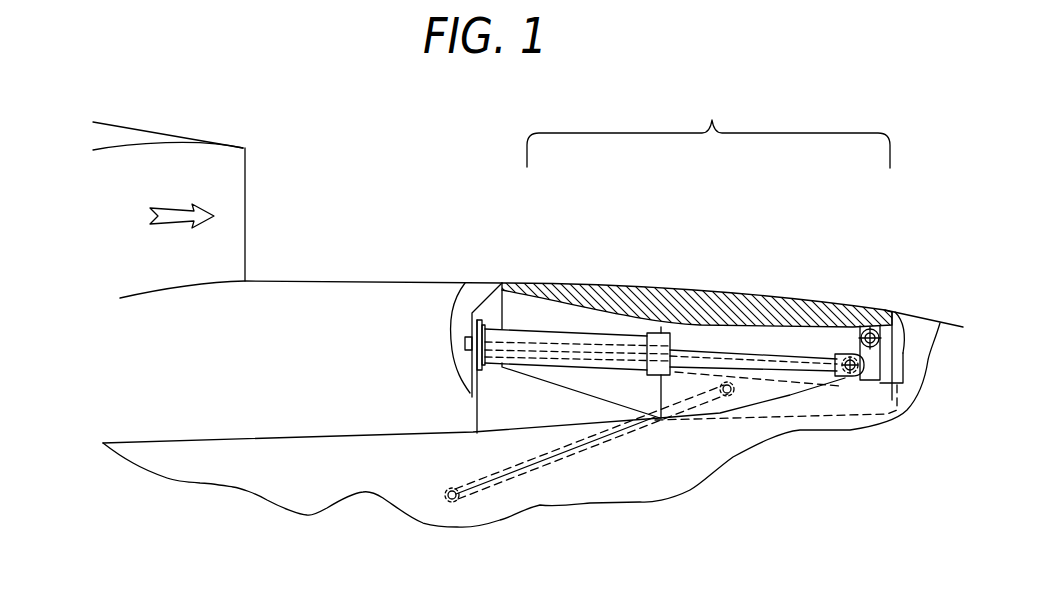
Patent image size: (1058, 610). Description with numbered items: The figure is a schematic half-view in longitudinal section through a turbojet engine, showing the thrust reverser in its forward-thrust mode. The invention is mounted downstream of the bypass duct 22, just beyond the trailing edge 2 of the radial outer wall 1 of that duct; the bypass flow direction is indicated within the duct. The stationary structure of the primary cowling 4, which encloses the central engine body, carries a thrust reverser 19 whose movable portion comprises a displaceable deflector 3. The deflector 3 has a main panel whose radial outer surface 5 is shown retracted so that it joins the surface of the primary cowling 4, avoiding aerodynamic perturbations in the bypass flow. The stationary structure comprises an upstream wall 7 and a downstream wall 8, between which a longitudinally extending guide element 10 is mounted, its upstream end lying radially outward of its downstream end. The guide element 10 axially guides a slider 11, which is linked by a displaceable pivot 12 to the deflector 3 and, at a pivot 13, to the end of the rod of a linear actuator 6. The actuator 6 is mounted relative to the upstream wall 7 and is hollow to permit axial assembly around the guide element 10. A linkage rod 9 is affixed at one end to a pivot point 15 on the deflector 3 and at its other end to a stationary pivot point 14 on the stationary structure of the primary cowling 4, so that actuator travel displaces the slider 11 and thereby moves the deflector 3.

The radial outer wall 1 is at (148, 142).
The trailing edge 2 is at (245, 148).
The deflector 3 is at (707, 307).
The primary cowling 4 is at (388, 300).
The radial outer surface 5 is at (634, 286).
The linear actuator 6 is at (550, 333).
The upstream wall 7 is at (472, 392).
The downstream wall 8 is at (918, 313).
The linkage rod 9 is at (565, 455).
The guide element 10 is at (888, 372).
The slider 11 is at (868, 383).
The displaceable pivot 12 is at (870, 327).
The pivot 13 is at (847, 376).
The stationary pivot point 14 is at (452, 500).
The pivot point 15 is at (728, 398).
The thrust reverser 19 is at (708, 126).
The bypass duct 22 is at (182, 236).